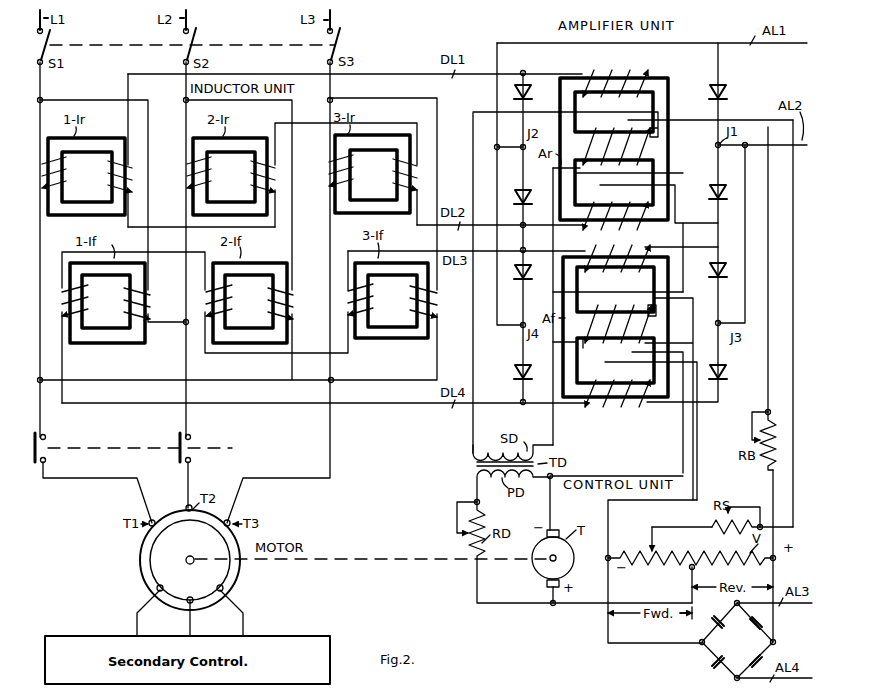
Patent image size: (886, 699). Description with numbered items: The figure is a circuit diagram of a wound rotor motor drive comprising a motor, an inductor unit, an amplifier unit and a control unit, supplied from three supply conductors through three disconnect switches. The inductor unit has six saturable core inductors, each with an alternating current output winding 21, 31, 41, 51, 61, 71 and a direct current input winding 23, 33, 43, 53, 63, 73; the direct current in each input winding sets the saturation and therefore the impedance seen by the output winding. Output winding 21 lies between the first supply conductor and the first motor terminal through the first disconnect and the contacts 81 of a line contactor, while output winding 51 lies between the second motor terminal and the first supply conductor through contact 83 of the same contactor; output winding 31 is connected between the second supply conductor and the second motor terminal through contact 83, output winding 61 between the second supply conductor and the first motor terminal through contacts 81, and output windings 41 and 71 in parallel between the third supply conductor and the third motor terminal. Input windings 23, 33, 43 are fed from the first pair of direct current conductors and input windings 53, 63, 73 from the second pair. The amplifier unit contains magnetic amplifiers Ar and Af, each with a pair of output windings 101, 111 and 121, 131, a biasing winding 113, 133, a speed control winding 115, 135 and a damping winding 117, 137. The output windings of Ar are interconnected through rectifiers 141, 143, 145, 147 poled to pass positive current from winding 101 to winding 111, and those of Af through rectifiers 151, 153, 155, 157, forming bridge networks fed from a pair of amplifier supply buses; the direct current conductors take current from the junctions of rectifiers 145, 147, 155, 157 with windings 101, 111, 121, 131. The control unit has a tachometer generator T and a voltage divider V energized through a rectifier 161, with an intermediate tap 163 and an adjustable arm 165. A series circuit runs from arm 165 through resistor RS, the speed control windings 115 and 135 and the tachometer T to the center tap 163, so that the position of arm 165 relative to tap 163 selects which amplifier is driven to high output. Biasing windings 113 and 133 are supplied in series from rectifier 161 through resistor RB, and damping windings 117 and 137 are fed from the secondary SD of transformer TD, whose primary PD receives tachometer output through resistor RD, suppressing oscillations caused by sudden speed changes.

The alternating current output winding 21 is at (64, 172).
The direct current input winding 23 is at (108, 186).
The alternating current output winding 31 is at (209, 172).
The direct current input winding 33 is at (252, 186).
The alternating current output winding 41 is at (353, 170).
The direct current input winding 43 is at (394, 184).
The alternating current output winding 51 is at (126, 310).
The direct current input winding 53 is at (83, 300).
The alternating current output winding 61 is at (270, 310).
The direct current input winding 63 is at (227, 300).
The alternating current output winding 71 is at (374, 299).
The direct current input winding 73 is at (412, 306).
The contacts 81 is at (48, 455).
The contact 83 is at (178, 455).
The alternating current output winding 101 is at (606, 72).
The alternating current output winding 111 is at (615, 230).
The biasing winding 113 is at (656, 147).
The speed control winding 115 is at (614, 128).
The damping winding 117 is at (635, 226).
The alternating current output winding 121 is at (625, 254).
The alternating current output winding 131 is at (606, 398).
The biasing winding 133 is at (655, 332).
The speed control winding 135 is at (614, 306).
The damping winding 137 is at (625, 419).
The rectifier 141 is at (727, 91).
The rectifier 143 is at (713, 185).
The rectifier 145 is at (512, 93).
The rectifier 147 is at (515, 195).
The rectifier 151 is at (727, 282).
The rectifier 153 is at (722, 370).
The rectifier 155 is at (518, 264).
The rectifier 157 is at (516, 368).
The rectifier 161 is at (752, 649).
The intermediate tap 163 is at (690, 570).
The adjustable arm 165 is at (656, 548).